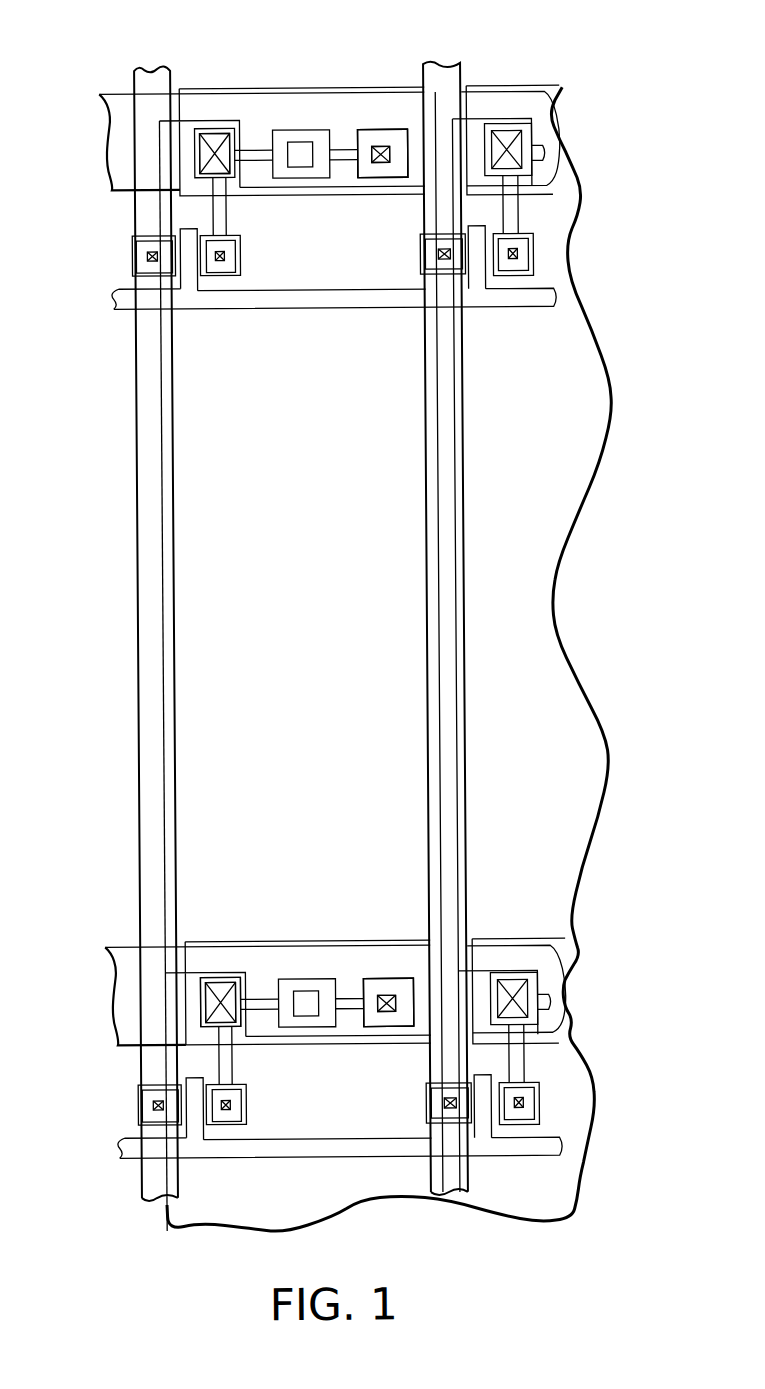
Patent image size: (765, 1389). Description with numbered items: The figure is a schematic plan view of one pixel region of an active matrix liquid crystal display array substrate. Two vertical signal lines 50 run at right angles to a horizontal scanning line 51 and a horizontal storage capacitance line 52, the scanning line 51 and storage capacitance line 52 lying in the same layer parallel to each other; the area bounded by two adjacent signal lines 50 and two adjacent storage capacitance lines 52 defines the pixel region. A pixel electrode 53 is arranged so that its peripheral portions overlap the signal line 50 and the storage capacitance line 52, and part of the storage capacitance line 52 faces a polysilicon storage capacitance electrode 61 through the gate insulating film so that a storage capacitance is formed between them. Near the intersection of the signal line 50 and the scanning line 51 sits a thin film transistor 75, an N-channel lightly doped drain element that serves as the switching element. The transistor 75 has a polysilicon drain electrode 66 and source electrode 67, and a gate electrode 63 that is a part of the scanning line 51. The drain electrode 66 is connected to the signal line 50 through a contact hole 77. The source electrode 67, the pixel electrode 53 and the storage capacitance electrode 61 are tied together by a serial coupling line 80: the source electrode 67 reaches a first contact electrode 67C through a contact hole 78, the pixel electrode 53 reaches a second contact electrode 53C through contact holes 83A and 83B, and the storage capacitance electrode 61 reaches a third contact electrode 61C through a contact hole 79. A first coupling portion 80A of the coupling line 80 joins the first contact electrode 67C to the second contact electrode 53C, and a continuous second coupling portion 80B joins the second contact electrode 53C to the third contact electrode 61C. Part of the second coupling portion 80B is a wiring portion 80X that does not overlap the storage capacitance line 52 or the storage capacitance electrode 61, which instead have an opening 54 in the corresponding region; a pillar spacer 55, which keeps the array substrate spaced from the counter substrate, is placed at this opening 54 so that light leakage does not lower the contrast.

The signal line 50 is at (152, 74).
The scanning line 51 is at (118, 299).
The storage capacitance line 52 is at (125, 134).
The pixel electrode 53 is at (200, 128).
The second contact electrode 53C is at (200, 980).
The opening 54 is at (270, 150).
The pillar spacer 55 is at (288, 142).
The storage capacitance electrode 61 is at (367, 87).
The third contact electrode 61C is at (393, 178).
The gate electrode 63 is at (190, 228).
The drain electrode 66 is at (143, 235).
The source electrode 67 is at (241, 243).
The first contact electrode 67C is at (242, 249).
The thin film transistor 75 is at (120, 265).
The contact hole 77 is at (140, 253).
The contact hole 78 is at (227, 258).
The contact hole 79 is at (382, 150).
The serial coupling line 80 is at (350, 128).
The first coupling portion 80A is at (228, 203).
The second coupling portion 80B is at (347, 165).
The wiring portion 80X is at (302, 153).
The contact hole 83A is at (217, 130).
The contact hole 83B is at (249, 520).